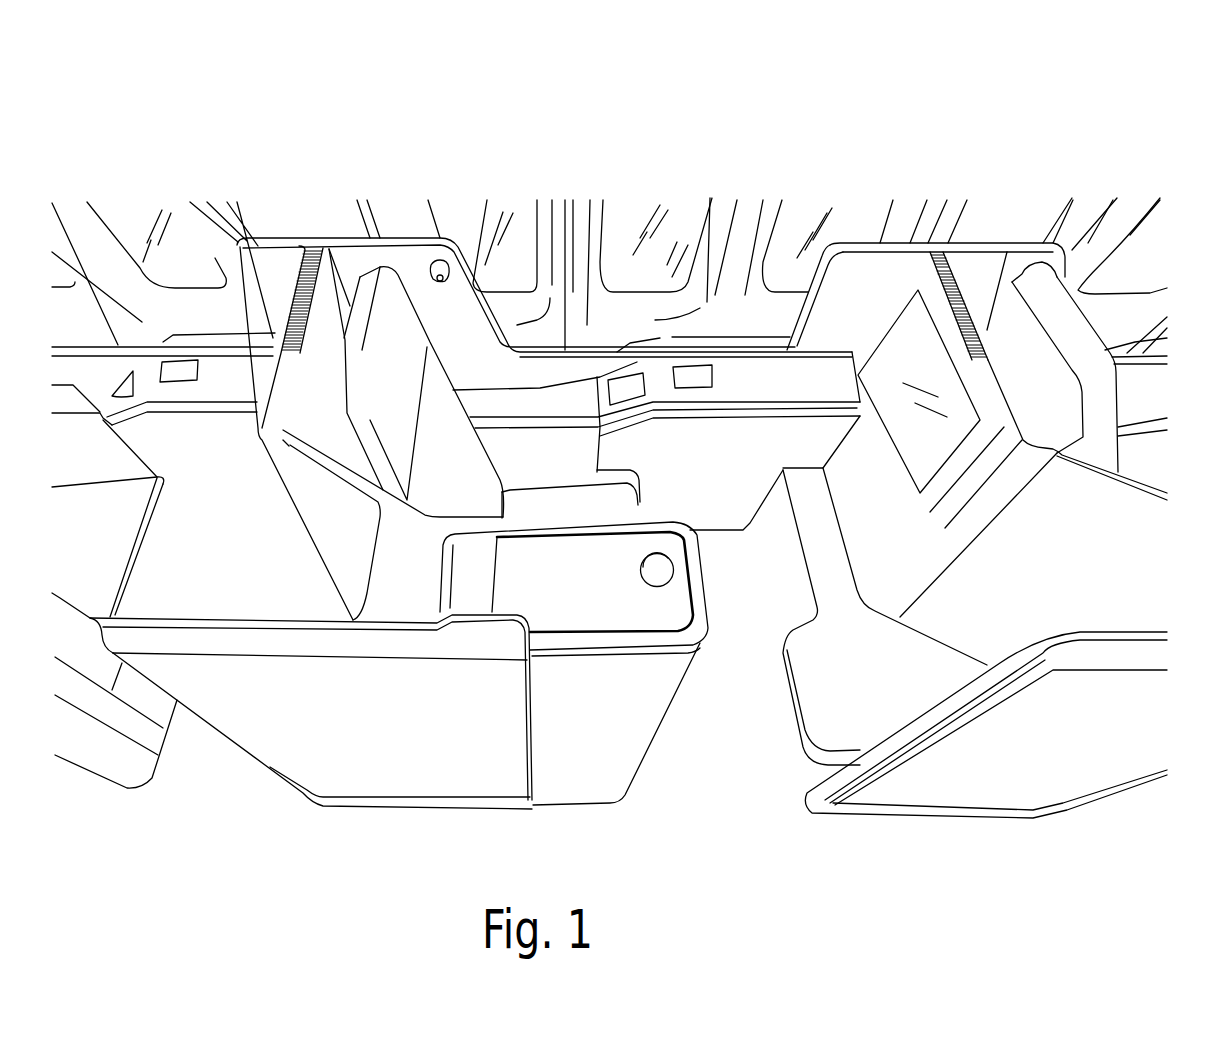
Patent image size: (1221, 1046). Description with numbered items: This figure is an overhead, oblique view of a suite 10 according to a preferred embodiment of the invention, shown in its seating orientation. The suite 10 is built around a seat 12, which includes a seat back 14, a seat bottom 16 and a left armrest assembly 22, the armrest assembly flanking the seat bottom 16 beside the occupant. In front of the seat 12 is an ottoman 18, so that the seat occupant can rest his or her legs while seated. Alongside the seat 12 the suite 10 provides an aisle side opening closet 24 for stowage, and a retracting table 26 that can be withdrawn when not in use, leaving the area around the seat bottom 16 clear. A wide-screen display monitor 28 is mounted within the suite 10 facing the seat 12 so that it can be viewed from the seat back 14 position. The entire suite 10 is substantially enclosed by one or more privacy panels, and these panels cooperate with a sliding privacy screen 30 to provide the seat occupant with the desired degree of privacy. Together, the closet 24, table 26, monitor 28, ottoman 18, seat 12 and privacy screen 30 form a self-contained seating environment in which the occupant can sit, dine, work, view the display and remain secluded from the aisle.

The suite 10 is at (110, 108).
The seat 12 is at (390, 278).
The seat back 14 is at (449, 425).
The seat bottom 16 is at (607, 502).
The ottoman 18 is at (830, 553).
The left armrest assembly 22 is at (540, 398).
The aisle side opening closet 24 is at (688, 690).
The retracting table 26 is at (602, 590).
The wide-screen display monitor 28 is at (925, 338).
The sliding privacy screen 30 is at (248, 638).